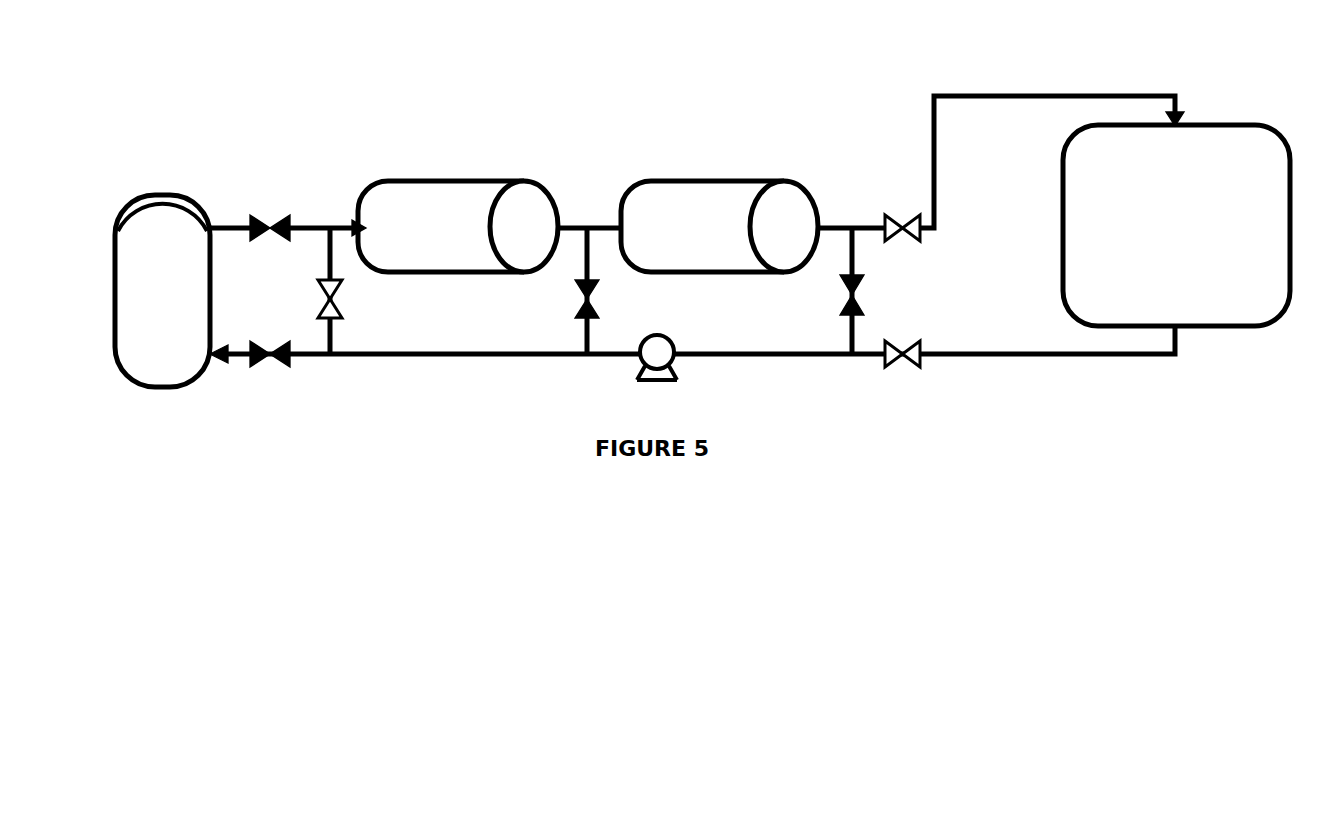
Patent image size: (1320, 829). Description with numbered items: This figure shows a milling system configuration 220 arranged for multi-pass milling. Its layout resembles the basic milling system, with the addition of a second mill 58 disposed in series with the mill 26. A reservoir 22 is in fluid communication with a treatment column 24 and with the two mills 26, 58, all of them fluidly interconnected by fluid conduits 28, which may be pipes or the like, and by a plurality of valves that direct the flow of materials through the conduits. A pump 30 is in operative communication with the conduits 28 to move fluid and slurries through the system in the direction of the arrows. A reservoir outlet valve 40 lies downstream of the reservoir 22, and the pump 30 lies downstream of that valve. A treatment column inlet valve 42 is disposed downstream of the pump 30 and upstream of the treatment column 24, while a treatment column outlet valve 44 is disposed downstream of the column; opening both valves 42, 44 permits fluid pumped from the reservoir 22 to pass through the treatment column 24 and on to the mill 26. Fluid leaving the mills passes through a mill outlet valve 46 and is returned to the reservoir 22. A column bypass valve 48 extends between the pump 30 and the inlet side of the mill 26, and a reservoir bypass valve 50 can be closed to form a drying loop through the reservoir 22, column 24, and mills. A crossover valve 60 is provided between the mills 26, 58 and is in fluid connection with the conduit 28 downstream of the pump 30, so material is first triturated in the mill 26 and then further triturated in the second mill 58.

The system configuration 220 is at (790, 73).
The reservoir 22 is at (1090, 243).
The treatment column 24 is at (214, 294).
The mill 26 is at (480, 196).
The fluid conduits 28 is at (813, 356).
The pump 30 is at (670, 378).
The reservoir outlet valve 40 is at (913, 365).
The treatment column inlet valve 42 is at (290, 364).
The treatment column outlet valve 44 is at (258, 219).
The mill outlet valve 46 is at (903, 222).
The column bypass valve 48 is at (342, 298).
The reservoir bypass valve 50 is at (865, 301).
The second mill 58 is at (750, 190).
The crossover valve 60 is at (575, 300).